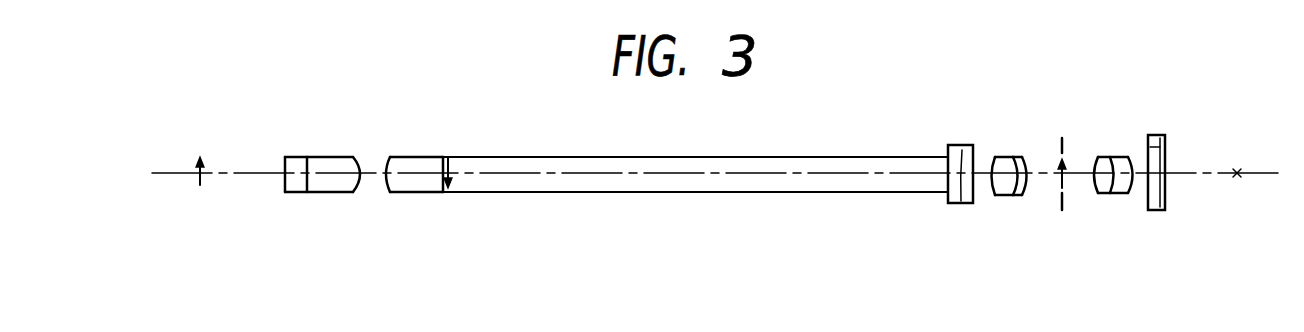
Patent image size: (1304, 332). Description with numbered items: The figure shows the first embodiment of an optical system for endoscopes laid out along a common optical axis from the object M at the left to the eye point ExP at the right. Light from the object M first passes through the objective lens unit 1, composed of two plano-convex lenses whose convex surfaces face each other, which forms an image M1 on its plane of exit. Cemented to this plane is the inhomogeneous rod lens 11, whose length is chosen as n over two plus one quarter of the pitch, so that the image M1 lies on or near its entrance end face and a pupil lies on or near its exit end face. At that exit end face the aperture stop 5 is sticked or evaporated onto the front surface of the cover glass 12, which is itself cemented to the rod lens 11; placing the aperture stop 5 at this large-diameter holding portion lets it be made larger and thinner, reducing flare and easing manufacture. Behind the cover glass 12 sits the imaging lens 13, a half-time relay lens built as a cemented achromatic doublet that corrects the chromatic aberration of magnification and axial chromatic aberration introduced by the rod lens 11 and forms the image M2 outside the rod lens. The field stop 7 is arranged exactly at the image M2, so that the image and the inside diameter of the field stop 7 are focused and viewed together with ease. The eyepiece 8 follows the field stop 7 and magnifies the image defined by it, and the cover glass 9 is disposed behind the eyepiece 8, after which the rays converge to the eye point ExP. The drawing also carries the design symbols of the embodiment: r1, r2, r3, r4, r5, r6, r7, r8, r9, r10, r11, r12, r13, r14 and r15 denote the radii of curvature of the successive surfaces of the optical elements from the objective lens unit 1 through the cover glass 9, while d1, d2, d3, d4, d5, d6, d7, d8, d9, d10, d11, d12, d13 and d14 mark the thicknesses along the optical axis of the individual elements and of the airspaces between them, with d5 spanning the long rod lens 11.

The objective lens unit 1 is at (445, 236).
The inhomogeneous rod lens 11 is at (948, 236).
The aperture stop 5 is at (948, 203).
The cover glass 12 is at (978, 197).
The imaging lens 13 is at (1003, 197).
The field stop 7 is at (1062, 138).
The eyepiece 8 is at (1114, 157).
The cover glass 9 is at (1156, 135).
The object M is at (198, 156).
The image M1 is at (442, 159).
The image M2 is at (1064, 196).
The eye point ExP is at (1238, 159).
The radius of curvature r1 is at (284, 168).
The radius of curvature r2 is at (307, 167).
The radius of curvature r3 is at (362, 168).
The radius of curvature r4 is at (386, 168).
The radius of curvature r5 is at (445, 167).
The radius of curvature r6 is at (948, 167).
The radius of curvature r7 is at (975, 165).
The radius of curvature r8 is at (992, 165).
The radius of curvature r9 is at (1015, 165).
The radius of curvature r10 is at (1028, 165).
The radius of curvature r11 is at (1094, 165).
The radius of curvature r12 is at (1113, 165).
The radius of curvature r13 is at (1132, 165).
The radius of curvature r14 is at (1166, 151).
The radius of curvature r15 is at (1167, 160).
The thickness d1 is at (284, 184).
The thickness d2 is at (331, 176).
The thickness d3 is at (377, 178).
The thickness d4 is at (417, 176).
The thickness d5 is at (683, 176).
The thickness d6 is at (958, 205).
The thickness d7 is at (985, 177).
The thickness d8 is at (1004, 197).
The thickness d9 is at (1031, 197).
The thickness d10 is at (1060, 197).
The thickness d11 is at (1096, 195).
The axial thickness / spacing 12 d12 is at (1114, 195).
The axial thickness / spacing 13 d13 is at (1141, 192).
The axial thickness / spacing 14 d14 is at (1160, 211).